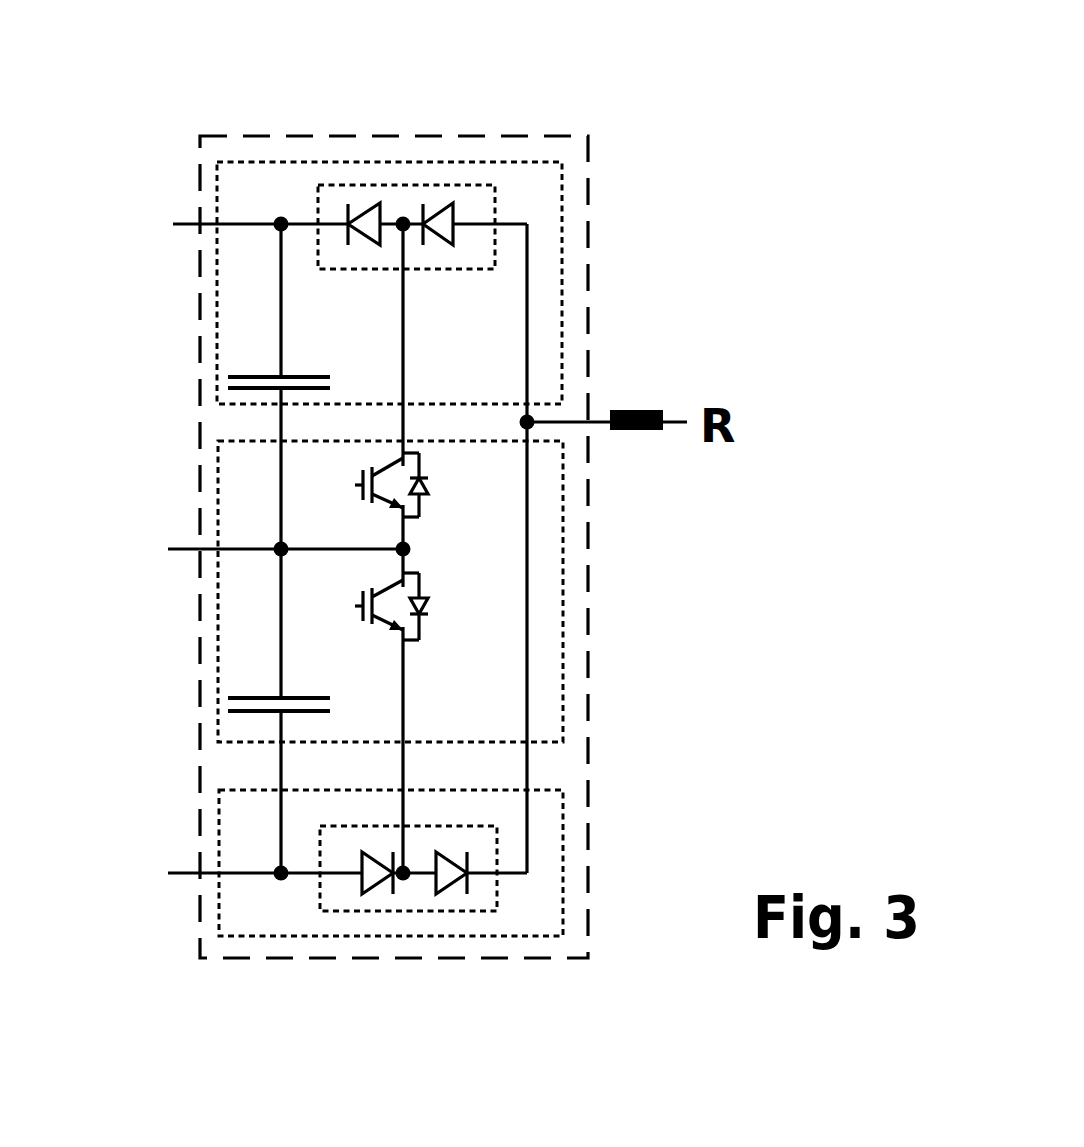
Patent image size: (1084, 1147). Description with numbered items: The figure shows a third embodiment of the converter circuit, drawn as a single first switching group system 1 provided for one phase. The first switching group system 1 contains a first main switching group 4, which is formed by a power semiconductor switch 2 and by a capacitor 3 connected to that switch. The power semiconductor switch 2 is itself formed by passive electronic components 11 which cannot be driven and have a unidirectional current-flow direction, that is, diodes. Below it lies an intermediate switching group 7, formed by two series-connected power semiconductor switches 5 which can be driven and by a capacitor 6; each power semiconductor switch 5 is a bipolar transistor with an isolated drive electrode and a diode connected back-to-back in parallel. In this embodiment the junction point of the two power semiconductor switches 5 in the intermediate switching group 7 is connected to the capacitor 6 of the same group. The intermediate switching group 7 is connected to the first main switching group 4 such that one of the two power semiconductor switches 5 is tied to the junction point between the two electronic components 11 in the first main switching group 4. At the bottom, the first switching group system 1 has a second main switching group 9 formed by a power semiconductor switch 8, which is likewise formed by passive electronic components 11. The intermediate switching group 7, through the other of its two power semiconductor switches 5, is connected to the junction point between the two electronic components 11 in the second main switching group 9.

The first switching group system 1 is at (198, 183).
The power semiconductor switch 2 is at (437, 183).
The capacitor 3 is at (247, 377).
The first main switching group 4 is at (340, 160).
The power semiconductor switches which can be driven 5 is at (412, 453).
The capacitor 6 is at (247, 698).
The intermediate switching group 7 is at (218, 498).
The power semiconductor switch 8 is at (333, 827).
The second main switching group 9 is at (218, 838).
The passive electronic component 11 is at (439, 208).